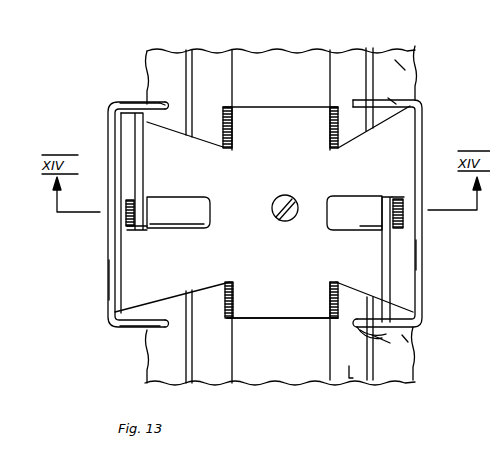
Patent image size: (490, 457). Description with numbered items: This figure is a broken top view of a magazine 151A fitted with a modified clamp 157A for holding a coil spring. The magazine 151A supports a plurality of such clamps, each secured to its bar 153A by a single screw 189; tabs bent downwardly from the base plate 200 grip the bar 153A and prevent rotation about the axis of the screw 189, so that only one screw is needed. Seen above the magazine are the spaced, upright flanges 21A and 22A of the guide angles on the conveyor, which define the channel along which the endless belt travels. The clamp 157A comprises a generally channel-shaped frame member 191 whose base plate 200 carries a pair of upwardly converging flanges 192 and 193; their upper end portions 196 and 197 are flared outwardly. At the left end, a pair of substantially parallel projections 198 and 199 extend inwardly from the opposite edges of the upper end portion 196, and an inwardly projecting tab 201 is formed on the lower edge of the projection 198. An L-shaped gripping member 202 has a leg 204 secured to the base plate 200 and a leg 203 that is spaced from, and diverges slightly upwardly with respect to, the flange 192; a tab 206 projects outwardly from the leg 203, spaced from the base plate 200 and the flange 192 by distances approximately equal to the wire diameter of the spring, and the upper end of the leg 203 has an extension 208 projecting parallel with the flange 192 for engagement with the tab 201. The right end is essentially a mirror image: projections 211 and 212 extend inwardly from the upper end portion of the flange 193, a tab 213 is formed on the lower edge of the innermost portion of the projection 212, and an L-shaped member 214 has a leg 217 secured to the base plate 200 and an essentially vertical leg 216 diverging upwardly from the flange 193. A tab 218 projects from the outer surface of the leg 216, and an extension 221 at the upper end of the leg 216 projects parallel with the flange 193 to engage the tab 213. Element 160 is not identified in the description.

The upright flange 21A is at (163, 62).
The upright flange 22A is at (398, 62).
The panel rib 160 is at (207, 62).
The bar 153A is at (317, 75).
The magazine 151A is at (350, 382).
The modified clamp 157A is at (353, 333).
The projection 211 is at (390, 98).
The projection 212 is at (400, 338).
The tab 213 is at (388, 345).
The upper end portion 196 is at (108, 128).
The projection 198 is at (136, 102).
The tab 201 is at (165, 110).
The flange 192 is at (114, 285).
The projection 199 is at (140, 328).
The upper end portion 197 is at (417, 115).
The flange 193 is at (412, 257).
The extension 208 is at (143, 145).
The leg 203 is at (133, 232).
The tab 206 is at (127, 213).
The L-shaped gripping member 202 is at (148, 201).
The leg 204 is at (168, 228).
The base plate 200 is at (280, 212).
The screw 189 is at (291, 222).
The channel-shaped frame member 191 is at (202, 292).
The leg 217 is at (346, 210).
The L-shaped member 214 is at (375, 222).
The leg 216 is at (402, 186).
The tab 218 is at (405, 214).
The extension 221 is at (386, 283).